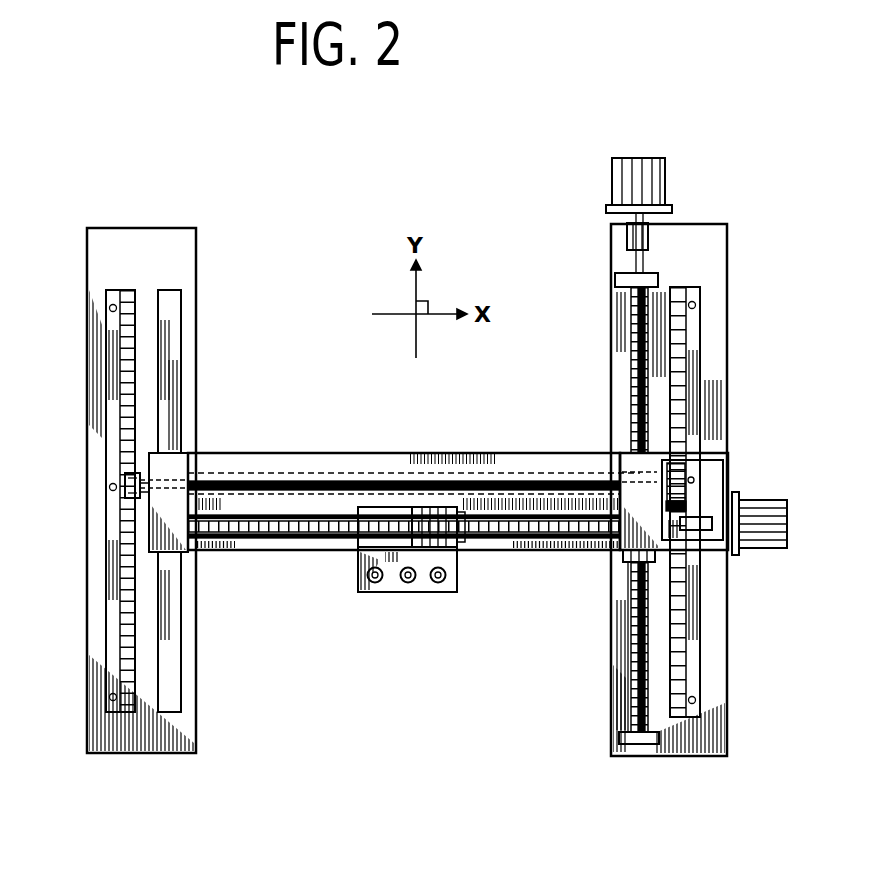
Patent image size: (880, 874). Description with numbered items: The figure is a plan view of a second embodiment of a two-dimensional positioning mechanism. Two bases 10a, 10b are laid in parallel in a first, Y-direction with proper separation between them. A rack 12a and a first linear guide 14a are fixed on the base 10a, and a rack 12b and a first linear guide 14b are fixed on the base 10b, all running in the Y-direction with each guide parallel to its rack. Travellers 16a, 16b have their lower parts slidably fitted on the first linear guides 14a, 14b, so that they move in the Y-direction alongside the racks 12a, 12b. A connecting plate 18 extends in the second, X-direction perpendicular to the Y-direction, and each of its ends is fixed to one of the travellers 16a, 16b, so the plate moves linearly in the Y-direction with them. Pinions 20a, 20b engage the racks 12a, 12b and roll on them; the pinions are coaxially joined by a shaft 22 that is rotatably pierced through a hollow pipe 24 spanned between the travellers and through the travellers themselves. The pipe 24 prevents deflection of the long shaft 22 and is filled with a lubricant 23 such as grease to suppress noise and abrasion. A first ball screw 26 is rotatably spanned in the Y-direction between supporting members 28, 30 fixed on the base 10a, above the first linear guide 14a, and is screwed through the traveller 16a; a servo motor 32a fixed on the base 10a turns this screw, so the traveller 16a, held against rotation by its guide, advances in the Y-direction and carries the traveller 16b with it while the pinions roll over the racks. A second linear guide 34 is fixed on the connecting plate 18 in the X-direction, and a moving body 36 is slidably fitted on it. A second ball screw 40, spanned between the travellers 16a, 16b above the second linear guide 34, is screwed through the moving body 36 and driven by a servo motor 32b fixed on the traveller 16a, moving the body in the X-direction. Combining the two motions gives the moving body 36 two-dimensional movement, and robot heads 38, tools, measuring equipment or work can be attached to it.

The base 10a is at (697, 760).
The base 10b is at (157, 755).
The rack 12a is at (695, 397).
The rack 12b is at (115, 422).
The first linear guide 14a is at (625, 645).
The first linear guide 14b is at (165, 418).
The traveller 16a is at (645, 508).
The traveller 16b is at (169, 500).
The connecting plate 18 is at (492, 453).
The pinion 20a is at (690, 477).
The pinion 20b is at (125, 490).
The shaft 22 is at (333, 483).
The lubricant 23 is at (253, 473).
The hollow pipe 24 is at (553, 470).
The first ball screw 26 is at (647, 338).
The supporting member 28 is at (627, 282).
The supporting member 30 is at (637, 737).
The servo motor 32a is at (668, 186).
The servo motor 32b is at (777, 540).
The second linear guide 34 is at (324, 527).
The moving body 36 is at (457, 578).
The robot head 38 is at (373, 583).
The second ball screw 40 is at (244, 545).